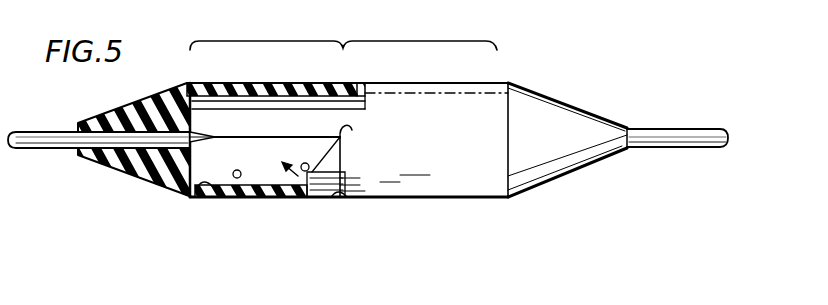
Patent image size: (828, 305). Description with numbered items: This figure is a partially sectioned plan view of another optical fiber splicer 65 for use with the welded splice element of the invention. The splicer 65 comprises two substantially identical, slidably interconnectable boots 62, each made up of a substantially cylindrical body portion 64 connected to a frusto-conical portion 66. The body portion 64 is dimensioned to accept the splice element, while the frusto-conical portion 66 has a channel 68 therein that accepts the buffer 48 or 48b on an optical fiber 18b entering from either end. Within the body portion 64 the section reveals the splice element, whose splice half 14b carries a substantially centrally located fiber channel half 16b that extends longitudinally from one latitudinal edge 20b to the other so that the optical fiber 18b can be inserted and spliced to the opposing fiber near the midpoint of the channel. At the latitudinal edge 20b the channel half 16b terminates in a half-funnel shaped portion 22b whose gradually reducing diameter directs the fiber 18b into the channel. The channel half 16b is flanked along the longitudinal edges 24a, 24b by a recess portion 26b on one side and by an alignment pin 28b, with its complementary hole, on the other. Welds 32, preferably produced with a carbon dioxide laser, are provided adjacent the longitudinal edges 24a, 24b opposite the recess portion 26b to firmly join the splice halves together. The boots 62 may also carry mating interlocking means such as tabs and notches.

The splice half 14b is at (315, 193).
The fiber channel half 16b is at (352, 130).
The optical fiber 18b is at (240, 100).
The latitudinal edge 20b is at (182, 106).
The half-funnel shaped portion 22b is at (178, 190).
The longitudinal edge 24a is at (357, 88).
The longitudinal edge 24b is at (277, 180).
The recess portion 26b is at (303, 108).
The alignment pin 28b is at (240, 180).
The weld 32 is at (217, 197).
The buffer 48 is at (678, 142).
The buffer 48b is at (52, 133).
The boot 62 is at (284, 33).
The cylindrical body portion 64 is at (193, 136).
The splicer 65 is at (604, 88).
The frusto-conical portion 66 is at (140, 88).
The channel 68 is at (121, 167).